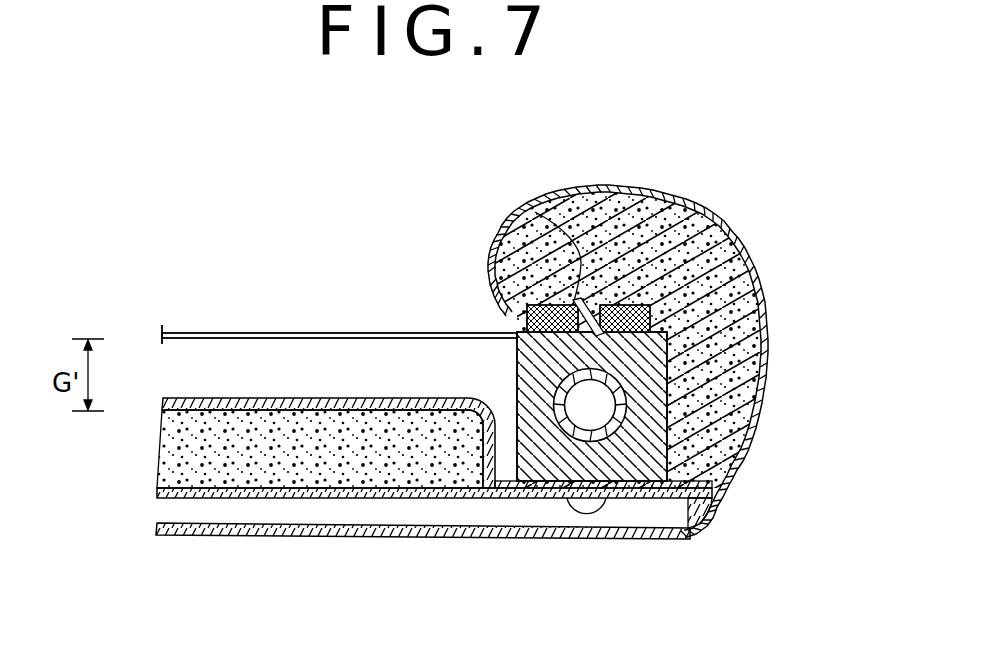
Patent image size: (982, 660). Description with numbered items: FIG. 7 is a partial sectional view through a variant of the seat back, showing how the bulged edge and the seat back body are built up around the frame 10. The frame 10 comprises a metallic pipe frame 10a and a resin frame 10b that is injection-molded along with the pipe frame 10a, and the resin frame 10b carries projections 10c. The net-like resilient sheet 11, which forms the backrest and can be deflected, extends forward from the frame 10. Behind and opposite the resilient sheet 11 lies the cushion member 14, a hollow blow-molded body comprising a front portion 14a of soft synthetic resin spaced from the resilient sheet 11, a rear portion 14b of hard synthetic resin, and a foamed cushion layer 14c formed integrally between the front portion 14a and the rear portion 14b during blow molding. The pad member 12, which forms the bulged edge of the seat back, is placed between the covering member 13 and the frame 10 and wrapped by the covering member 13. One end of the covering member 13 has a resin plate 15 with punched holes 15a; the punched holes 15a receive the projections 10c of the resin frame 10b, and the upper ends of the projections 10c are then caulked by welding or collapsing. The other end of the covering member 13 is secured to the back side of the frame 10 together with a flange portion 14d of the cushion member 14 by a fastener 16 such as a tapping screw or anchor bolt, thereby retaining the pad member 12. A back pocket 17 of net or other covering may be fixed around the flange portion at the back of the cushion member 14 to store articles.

The frame 10 is at (626, 323).
The metallic pipe frame 10a is at (517, 378).
The resin frame 10b is at (757, 322).
The projections 10c is at (535, 212).
The resilient sheet 11 is at (325, 333).
The pad member 12 is at (745, 443).
The covering member 13 is at (678, 196).
The cushion member 14 is at (378, 411).
The front portion 14a is at (190, 398).
The rear portion 14b is at (187, 499).
The foamed cushion layer 14c is at (157, 452).
The flange portion 14d is at (618, 502).
The resin plate 15 is at (690, 266).
The punched holes 15a is at (690, 266).
The fastener 16 is at (585, 513).
The back pocket 17 is at (357, 537).